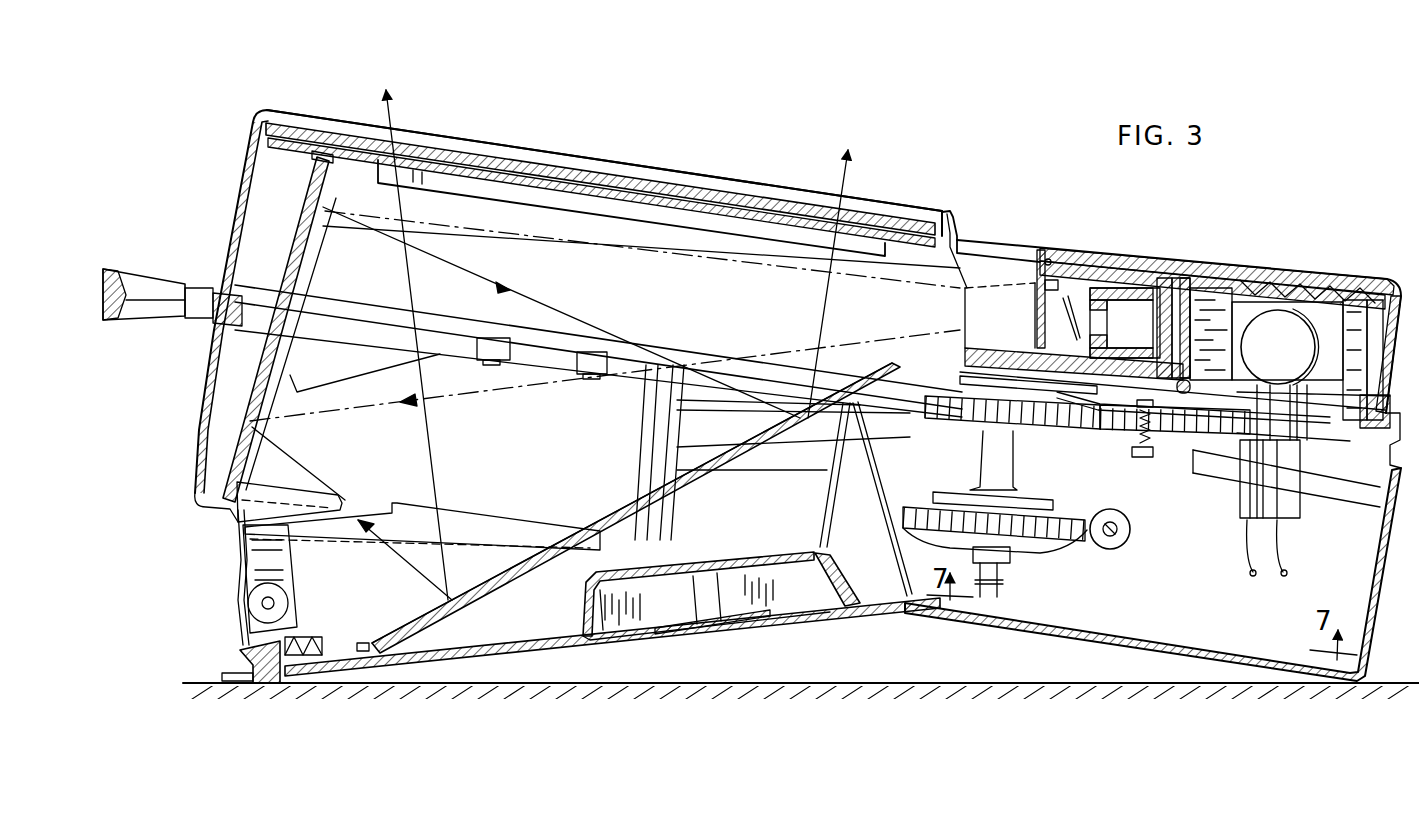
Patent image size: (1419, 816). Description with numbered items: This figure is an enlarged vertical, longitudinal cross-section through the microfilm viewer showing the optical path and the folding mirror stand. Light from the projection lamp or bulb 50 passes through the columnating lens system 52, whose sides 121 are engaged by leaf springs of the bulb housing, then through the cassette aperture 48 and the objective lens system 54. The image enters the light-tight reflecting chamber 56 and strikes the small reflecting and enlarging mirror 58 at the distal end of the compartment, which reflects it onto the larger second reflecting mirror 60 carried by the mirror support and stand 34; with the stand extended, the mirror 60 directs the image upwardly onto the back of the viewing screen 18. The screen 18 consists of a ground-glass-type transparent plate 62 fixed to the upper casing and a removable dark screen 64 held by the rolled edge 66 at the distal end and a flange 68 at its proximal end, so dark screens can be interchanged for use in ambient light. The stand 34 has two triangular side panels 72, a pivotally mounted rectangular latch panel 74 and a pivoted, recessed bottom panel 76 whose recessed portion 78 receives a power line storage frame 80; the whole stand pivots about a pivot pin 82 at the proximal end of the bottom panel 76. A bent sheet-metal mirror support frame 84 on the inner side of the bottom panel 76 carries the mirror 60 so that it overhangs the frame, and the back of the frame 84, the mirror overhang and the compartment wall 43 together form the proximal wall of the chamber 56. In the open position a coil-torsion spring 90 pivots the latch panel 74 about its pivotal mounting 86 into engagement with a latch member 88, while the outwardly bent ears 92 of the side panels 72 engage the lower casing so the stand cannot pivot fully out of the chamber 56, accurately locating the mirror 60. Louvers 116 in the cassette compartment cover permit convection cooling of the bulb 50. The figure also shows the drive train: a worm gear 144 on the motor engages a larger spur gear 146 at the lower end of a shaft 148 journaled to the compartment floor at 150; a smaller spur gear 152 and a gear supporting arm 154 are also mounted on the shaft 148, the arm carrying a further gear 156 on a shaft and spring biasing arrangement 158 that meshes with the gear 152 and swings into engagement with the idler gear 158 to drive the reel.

The viewing screen 18 is at (536, 154).
The mirror support and stand 34 is at (410, 676).
The compartment wall 43 is at (1020, 262).
The cassette aperture 48 is at (1117, 312).
The projection lamp or bulb 50 is at (1291, 358).
The columnating lens system 52 is at (1173, 290).
The objective lens system 54 is at (1012, 332).
The reflecting chamber 56 is at (528, 470).
The small reflecting and enlarging mirror 58 is at (298, 258).
The larger second reflecting mirror 60 is at (590, 526).
The ground-glass-type transparent plate 62 is at (880, 255).
The removable dark screen 64 is at (665, 188).
The rolled edge 66 is at (278, 113).
The flange 68 is at (950, 214).
The side panels 72 is at (298, 602).
The latch panel 74 is at (238, 587).
The bottom panel 76 is at (530, 650).
The recessed portion 78 is at (837, 603).
The power line storage frame 80 is at (713, 620).
The pivot pin 82 is at (913, 616).
The mirror support frame 84 is at (513, 582).
The pivotal mounting 86 is at (258, 610).
The latch member 88 is at (228, 512).
The coil-torsion spring 90 is at (272, 587).
The ears 92 is at (360, 513).
The louvers 116 is at (1232, 272).
The sides of the columnating lens system 121 is at (1180, 320).
The worm gear 144 is at (1130, 535).
The spur gear 146 is at (1060, 530).
The shaft 148 is at (1017, 470).
The journal 150 is at (973, 374).
The smaller spur gear 152 is at (937, 410).
The gear supporting arm 154 is at (1060, 400).
The gear 156 is at (1187, 430).
The idler gear 158 is at (1127, 433).